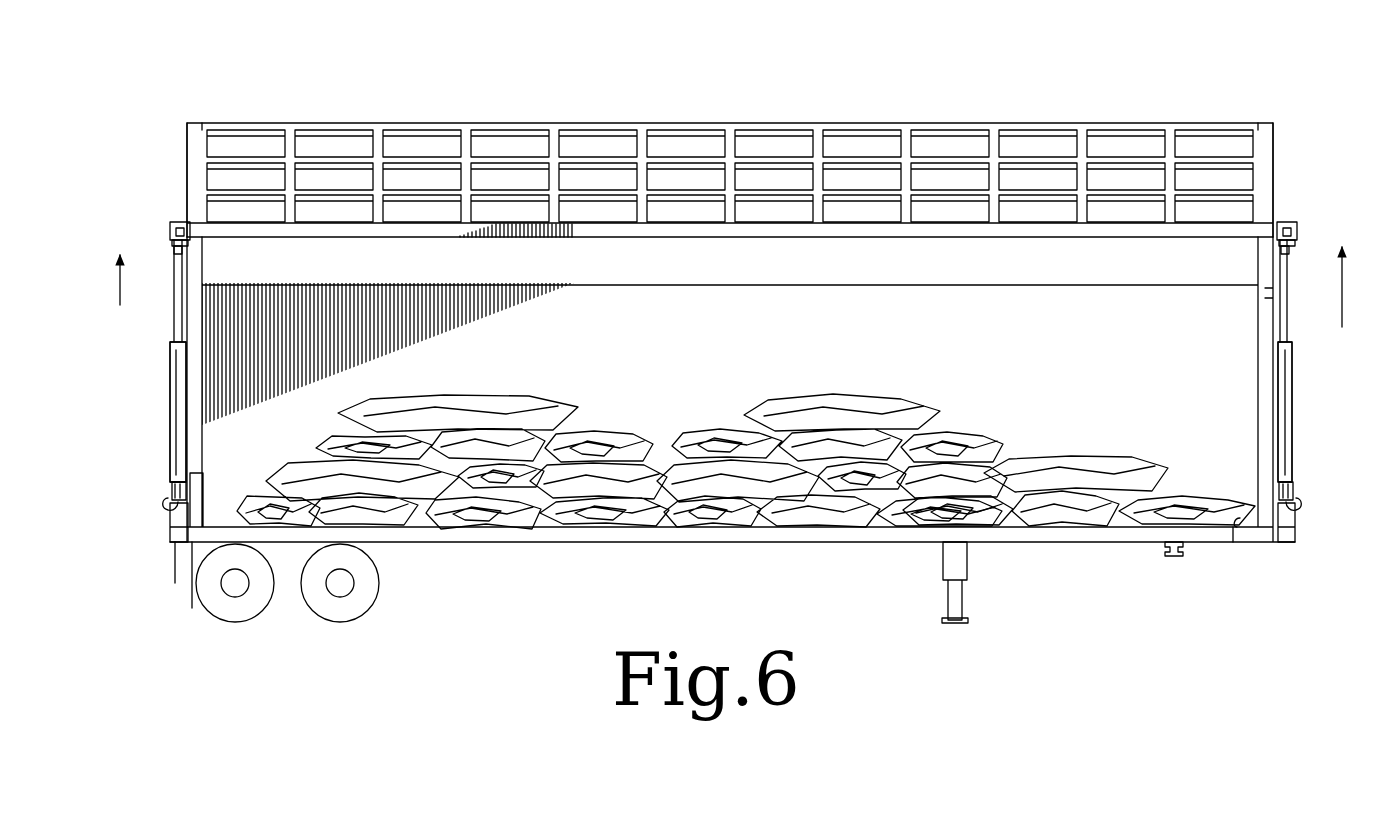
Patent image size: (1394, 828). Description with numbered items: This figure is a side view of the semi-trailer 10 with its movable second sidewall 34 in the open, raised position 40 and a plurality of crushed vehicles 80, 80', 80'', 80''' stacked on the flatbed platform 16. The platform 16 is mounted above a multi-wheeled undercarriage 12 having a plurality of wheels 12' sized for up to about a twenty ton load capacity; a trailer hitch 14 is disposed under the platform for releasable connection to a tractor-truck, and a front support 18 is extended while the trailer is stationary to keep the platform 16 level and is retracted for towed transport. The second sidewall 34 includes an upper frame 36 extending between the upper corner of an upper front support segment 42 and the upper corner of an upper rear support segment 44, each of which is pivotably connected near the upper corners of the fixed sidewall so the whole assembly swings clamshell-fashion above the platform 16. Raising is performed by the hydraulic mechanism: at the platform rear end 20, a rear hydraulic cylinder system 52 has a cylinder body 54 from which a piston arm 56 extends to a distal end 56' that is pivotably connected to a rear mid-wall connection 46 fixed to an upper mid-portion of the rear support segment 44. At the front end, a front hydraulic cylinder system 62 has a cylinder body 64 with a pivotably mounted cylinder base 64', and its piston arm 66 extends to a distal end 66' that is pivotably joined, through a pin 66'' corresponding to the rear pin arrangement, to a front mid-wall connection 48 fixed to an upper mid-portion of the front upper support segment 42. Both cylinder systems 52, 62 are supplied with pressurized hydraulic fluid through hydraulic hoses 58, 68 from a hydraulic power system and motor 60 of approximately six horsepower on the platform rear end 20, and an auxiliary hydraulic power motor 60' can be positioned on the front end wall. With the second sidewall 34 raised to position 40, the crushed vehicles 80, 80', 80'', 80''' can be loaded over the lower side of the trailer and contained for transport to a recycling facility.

The semi-trailer 10 is at (333, 105).
The multi-wheeled undercarriage 12 is at (340, 627).
The wheels 12' is at (235, 609).
The trailer hitch 14 is at (1172, 560).
The flatbed platform 16 is at (1237, 532).
The front support 18 is at (962, 598).
The rear end of platform 20 is at (168, 538).
The second sidewall 34 is at (696, 177).
The upper frame 36 is at (512, 127).
The open raised position 40 is at (118, 303).
The upper front support segment 42 is at (1273, 148).
The upper rear support segment 44 is at (187, 148).
The rear mid-wall connection 46 is at (178, 223).
The front mid-wall connection 48 is at (1286, 223).
The rear hydraulic cylinder system 52 is at (128, 382).
The cylinder body 54 is at (176, 442).
The piston arm 56 is at (142, 226).
The distal end of piston arm 56' is at (134, 204).
The hydraulic hoses 58 is at (168, 505).
The hydraulic power system and motor 60 is at (146, 539).
The auxiliary hydraulic power motor 60' is at (1322, 538).
The front hydraulic cylinder system 62 is at (1315, 382).
The cylinder body 64 is at (1332, 412).
The cylinder base 64' is at (1326, 473).
The piston arm 66 is at (1328, 281).
The distal end of piston arm 66' is at (1328, 203).
The right rod end 66'' is at (1330, 224).
The hydraulic hoses 68 is at (1298, 505).
The crushed vehicle 80 is at (453, 530).
The crushed vehicle 80' is at (484, 499).
The crushed vehicle 80'' is at (832, 497).
The crushed vehicle 80''' is at (1079, 532).